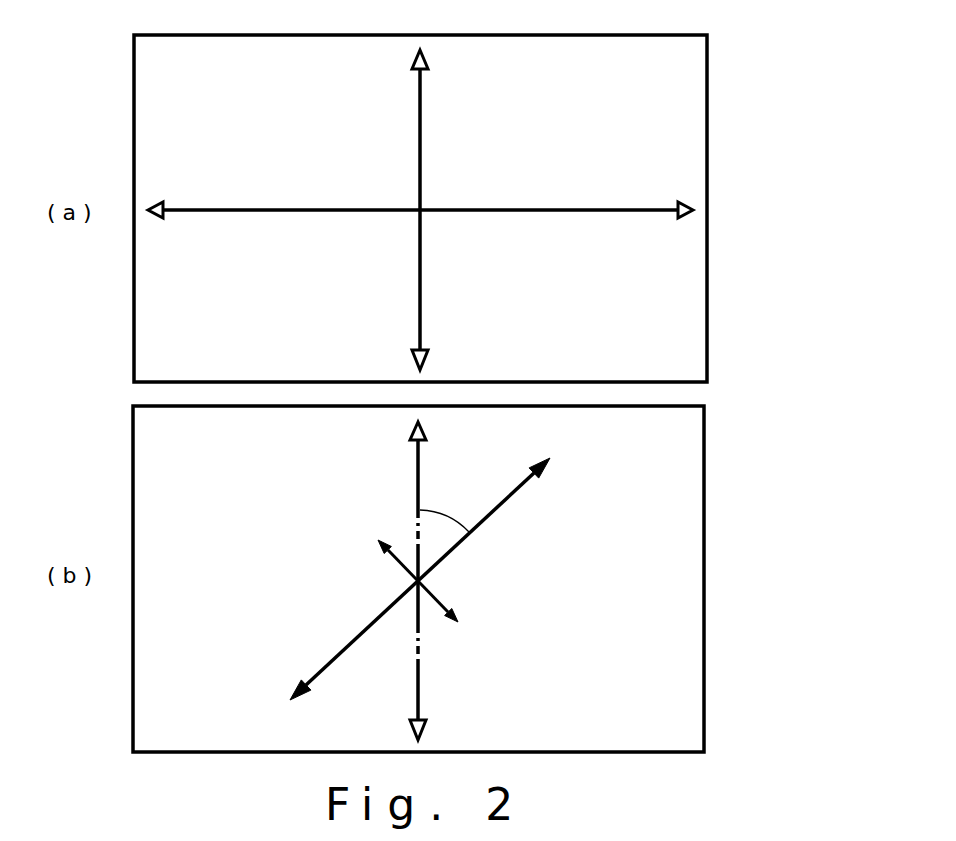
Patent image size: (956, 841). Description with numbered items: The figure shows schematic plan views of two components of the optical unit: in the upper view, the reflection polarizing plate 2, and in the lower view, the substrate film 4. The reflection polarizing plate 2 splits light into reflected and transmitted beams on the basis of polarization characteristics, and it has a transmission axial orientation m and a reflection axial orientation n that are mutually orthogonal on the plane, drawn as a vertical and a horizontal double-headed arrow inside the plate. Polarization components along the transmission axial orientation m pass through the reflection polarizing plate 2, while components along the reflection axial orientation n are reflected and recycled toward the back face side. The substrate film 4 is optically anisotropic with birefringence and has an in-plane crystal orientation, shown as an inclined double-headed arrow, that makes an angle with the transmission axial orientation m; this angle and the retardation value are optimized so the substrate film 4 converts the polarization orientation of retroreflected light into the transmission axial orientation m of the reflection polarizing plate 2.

The reflection polarizing plate 2 is at (707, 286).
The substrate film 4 is at (704, 660).
The transmission axial orientation m is at (418, 138).
The reflection axial orientation n is at (570, 210).